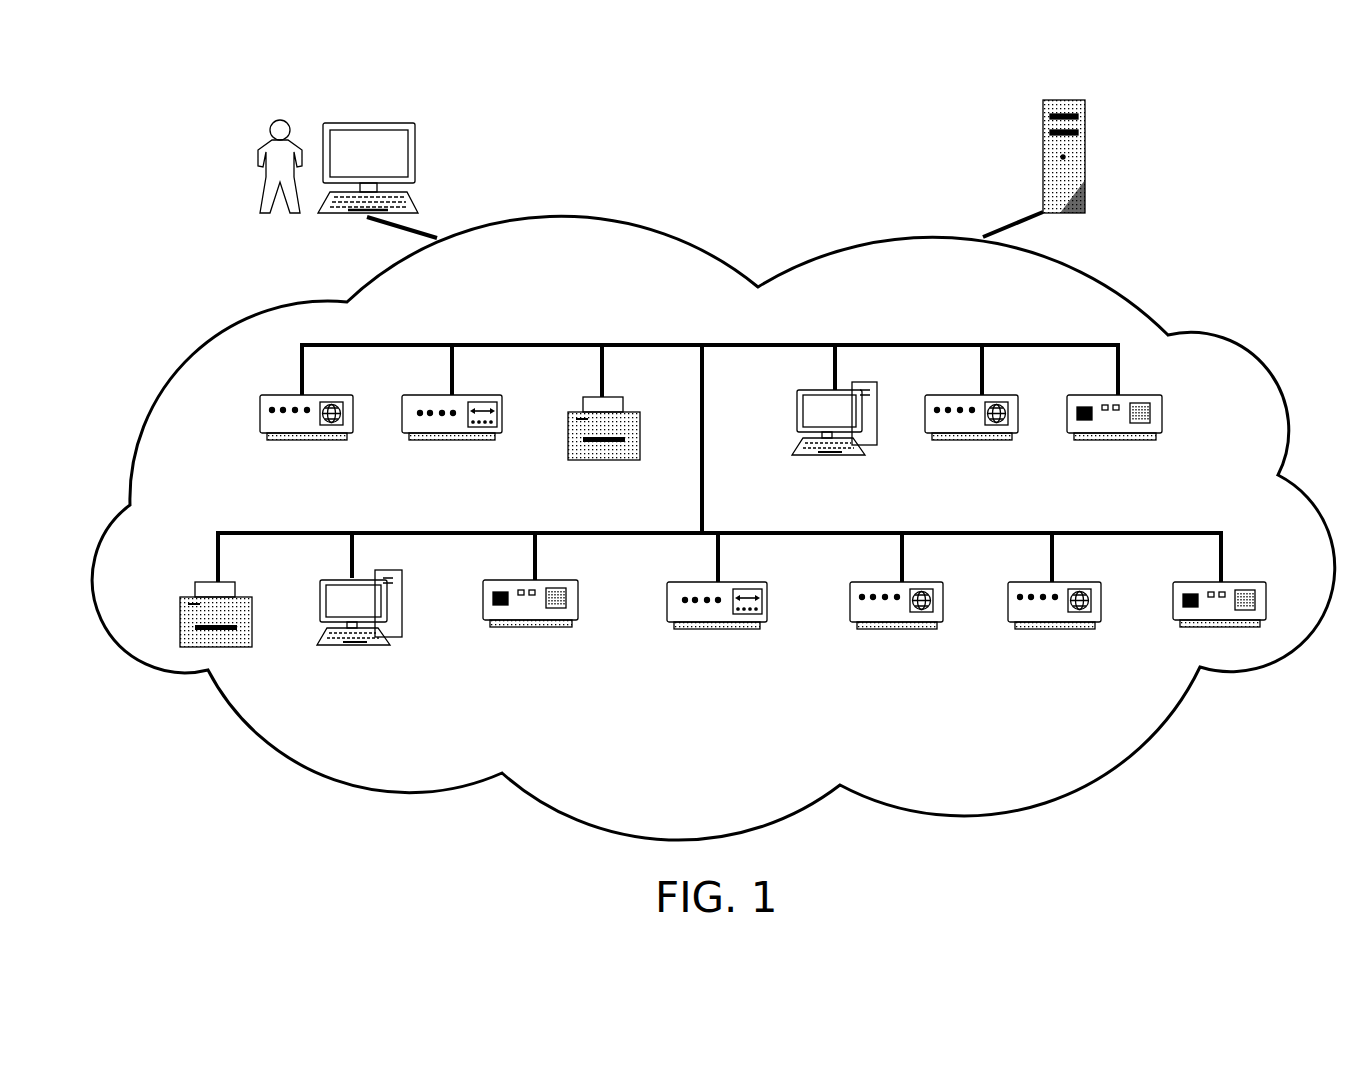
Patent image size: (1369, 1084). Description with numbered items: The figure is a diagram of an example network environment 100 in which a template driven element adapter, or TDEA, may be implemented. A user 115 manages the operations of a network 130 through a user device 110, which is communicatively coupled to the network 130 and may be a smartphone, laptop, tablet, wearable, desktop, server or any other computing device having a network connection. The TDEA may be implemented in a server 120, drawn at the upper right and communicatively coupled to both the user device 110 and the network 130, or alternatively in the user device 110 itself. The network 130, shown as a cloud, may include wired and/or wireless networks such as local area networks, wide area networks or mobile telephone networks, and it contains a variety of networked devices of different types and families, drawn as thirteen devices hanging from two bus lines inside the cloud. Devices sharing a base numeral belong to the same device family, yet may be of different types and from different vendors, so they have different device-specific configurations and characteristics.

The network environment 100 is at (702, 112).
The user device 110 is at (368, 122).
The user 115 is at (277, 121).
The server 120 is at (1065, 100).
The network 130 is at (1135, 288).